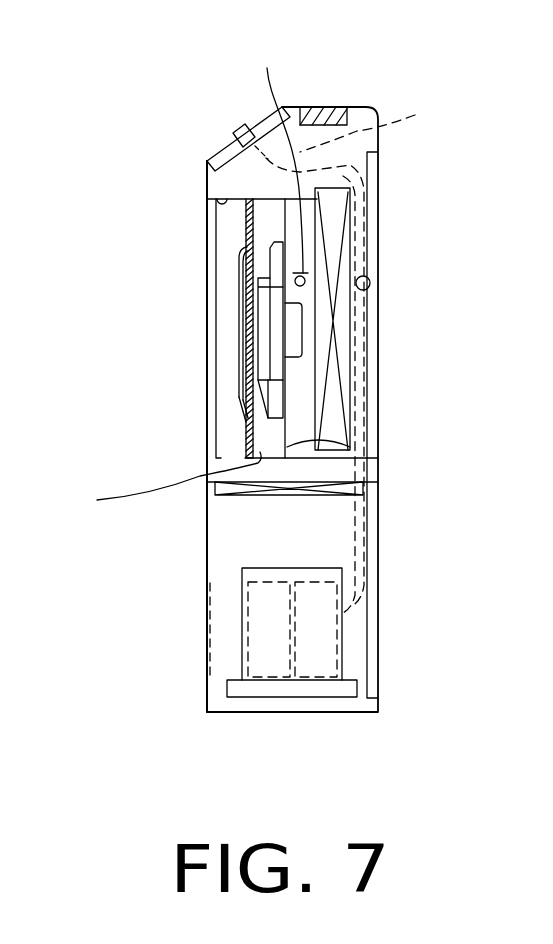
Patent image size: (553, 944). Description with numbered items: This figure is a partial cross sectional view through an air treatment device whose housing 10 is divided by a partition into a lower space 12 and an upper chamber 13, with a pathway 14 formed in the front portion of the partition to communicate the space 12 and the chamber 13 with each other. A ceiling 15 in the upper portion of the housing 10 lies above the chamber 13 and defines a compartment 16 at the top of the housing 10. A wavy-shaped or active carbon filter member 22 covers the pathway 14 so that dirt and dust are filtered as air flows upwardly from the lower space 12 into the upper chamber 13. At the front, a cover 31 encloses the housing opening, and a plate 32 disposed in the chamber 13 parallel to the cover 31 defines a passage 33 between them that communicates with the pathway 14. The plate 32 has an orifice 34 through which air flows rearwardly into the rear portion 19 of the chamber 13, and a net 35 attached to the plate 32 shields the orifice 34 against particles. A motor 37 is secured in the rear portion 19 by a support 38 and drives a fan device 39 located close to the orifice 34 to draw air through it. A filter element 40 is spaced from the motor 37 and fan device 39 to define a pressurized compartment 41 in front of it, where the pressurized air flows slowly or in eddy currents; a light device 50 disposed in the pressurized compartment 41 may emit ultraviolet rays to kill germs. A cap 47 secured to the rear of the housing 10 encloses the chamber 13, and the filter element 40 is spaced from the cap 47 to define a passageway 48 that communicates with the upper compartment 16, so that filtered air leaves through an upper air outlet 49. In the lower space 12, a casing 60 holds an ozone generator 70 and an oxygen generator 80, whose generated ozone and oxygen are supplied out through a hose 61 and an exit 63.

The housing 10 is at (357, 712).
The lower space 12 is at (227, 578).
The upper chamber 13 is at (160, 487).
The pathway 14 is at (230, 447).
The ceiling 15 is at (207, 203).
The compartment 16 is at (376, 123).
The rear portion of the chamber 19 is at (297, 377).
The filter member 22 is at (287, 493).
The cover 31 is at (207, 438).
The plate 32 is at (247, 417).
The passage 33 is at (223, 365).
The orifice 34 is at (248, 318).
The net 35 is at (242, 298).
The motor 37 is at (297, 343).
The support 38 is at (350, 447).
The fan device 39 is at (277, 267).
The filter element 40 is at (344, 318).
The pressurized compartment 41 is at (300, 418).
The cap 47 is at (373, 203).
The passageway 48 is at (370, 286).
The upper air outlet 49 is at (333, 107).
The light device 50 is at (279, 162).
The casing 60 is at (330, 573).
The hose 61 is at (370, 250).
The exit 63 is at (240, 133).
The ozone generator 70 is at (258, 622).
The oxygen generator 80 is at (323, 630).